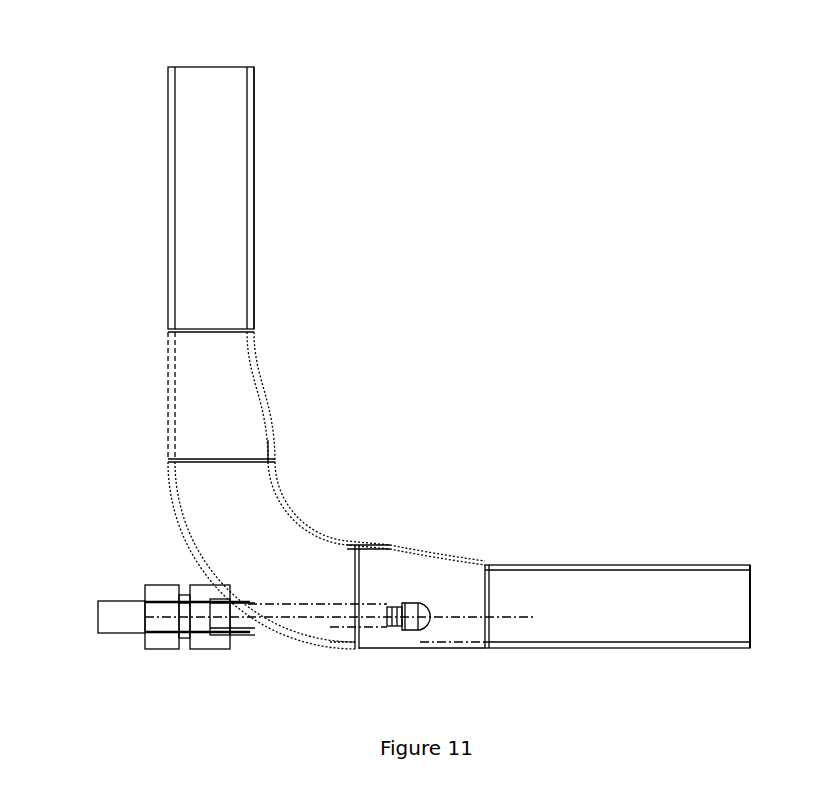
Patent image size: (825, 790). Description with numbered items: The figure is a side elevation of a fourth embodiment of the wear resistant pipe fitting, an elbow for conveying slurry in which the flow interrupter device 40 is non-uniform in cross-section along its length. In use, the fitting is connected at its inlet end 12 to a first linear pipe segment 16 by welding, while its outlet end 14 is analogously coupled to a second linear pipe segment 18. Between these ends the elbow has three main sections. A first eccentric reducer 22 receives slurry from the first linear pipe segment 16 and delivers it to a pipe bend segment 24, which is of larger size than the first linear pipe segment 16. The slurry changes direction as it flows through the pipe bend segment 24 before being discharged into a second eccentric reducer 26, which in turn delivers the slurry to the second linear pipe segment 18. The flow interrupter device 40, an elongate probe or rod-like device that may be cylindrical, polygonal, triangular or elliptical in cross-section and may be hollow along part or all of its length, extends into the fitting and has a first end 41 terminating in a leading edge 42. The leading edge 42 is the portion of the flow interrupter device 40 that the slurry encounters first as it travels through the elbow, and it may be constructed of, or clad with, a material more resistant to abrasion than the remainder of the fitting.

The inlet end 12 is at (750, 610).
The outlet end 14 is at (208, 67).
The first linear pipe segment 16 is at (610, 565).
The second linear pipe segment 18 is at (251, 218).
The first eccentric reducer 22 is at (387, 540).
The pipe bend segment 24 is at (299, 518).
The second eccentric reducer 26 is at (265, 390).
The flow interrupter device 40 is at (330, 628).
The first end 41 is at (413, 603).
The leading edge 42 is at (422, 620).